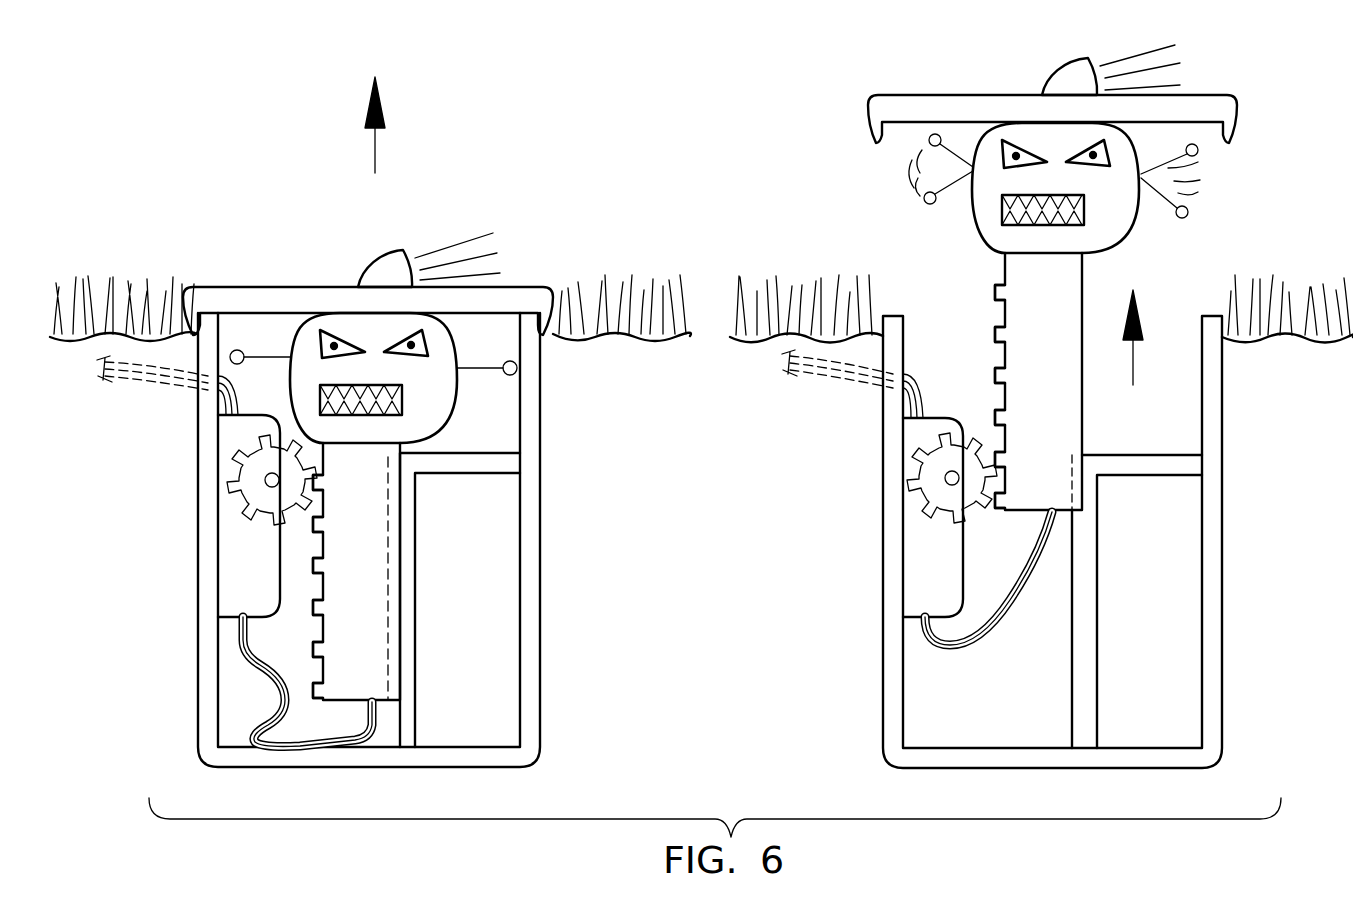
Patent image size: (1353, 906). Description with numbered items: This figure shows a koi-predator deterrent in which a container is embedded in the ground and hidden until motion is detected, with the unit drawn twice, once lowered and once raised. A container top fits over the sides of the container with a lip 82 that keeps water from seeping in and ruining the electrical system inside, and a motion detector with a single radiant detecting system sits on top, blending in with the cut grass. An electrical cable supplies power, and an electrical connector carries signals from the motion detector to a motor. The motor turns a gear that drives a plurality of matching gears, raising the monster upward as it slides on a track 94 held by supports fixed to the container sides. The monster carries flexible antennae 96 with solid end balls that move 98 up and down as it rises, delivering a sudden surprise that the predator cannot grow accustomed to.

The lip 82 is at (190, 300).
The track 94 is at (388, 540).
The antennae 96 is at (260, 358).
The antennae movement 98 is at (1195, 185).